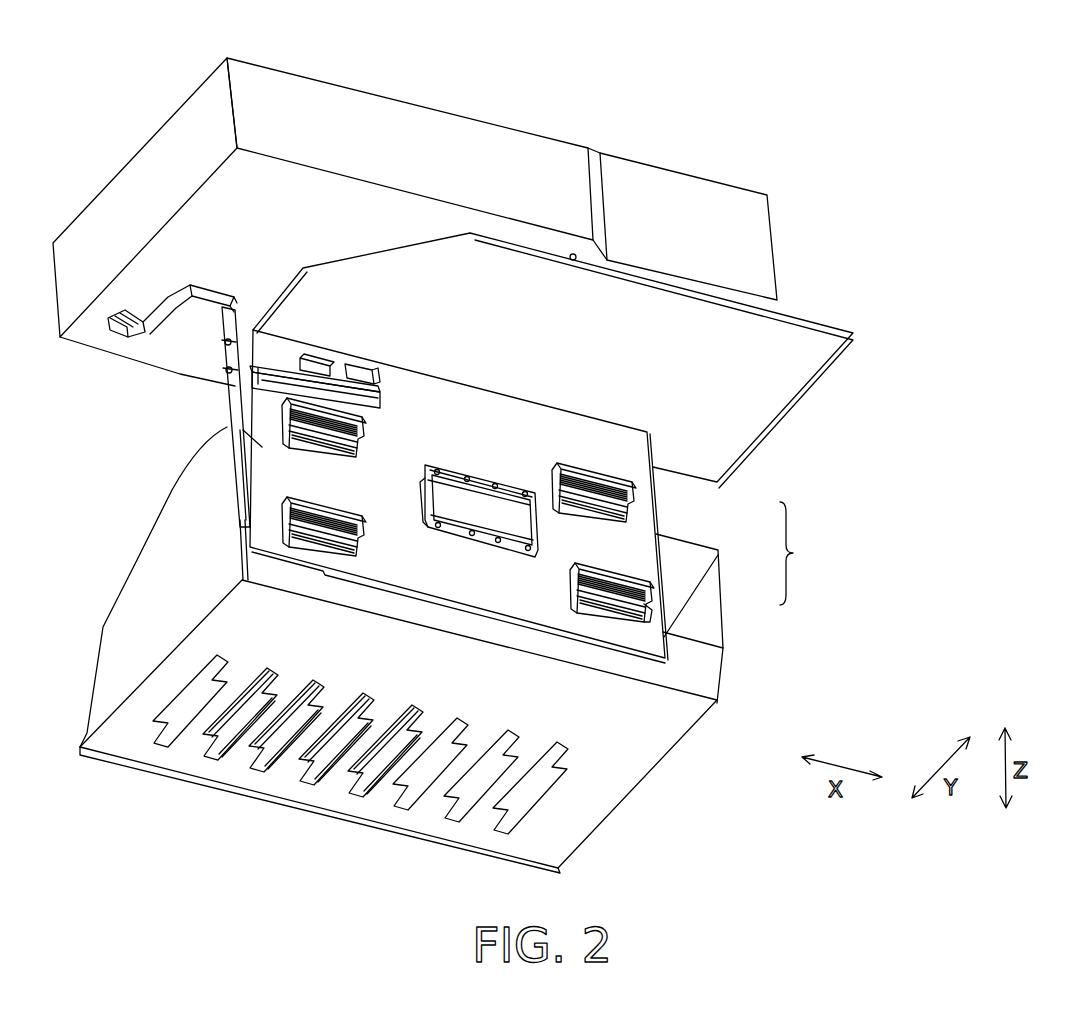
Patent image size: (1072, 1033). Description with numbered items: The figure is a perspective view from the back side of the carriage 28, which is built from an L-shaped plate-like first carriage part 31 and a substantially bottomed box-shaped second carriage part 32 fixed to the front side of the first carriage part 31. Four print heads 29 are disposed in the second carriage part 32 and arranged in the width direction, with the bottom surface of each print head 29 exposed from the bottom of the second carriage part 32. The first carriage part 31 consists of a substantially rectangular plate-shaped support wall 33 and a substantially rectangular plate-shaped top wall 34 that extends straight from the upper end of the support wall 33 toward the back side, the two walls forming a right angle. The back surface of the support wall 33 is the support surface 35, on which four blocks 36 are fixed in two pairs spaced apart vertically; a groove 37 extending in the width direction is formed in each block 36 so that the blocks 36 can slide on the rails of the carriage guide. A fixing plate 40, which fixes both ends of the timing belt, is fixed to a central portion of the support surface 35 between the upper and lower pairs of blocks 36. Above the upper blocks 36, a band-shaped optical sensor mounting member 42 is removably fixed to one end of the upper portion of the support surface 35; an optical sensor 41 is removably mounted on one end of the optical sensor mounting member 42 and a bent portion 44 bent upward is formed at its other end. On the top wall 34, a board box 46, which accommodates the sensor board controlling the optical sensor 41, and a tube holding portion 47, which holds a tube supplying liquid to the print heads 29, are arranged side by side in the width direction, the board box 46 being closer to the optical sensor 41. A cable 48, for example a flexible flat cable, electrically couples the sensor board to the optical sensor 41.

The carriage 28 is at (535, 516).
The print heads 29 is at (234, 720).
The first carriage part 31 is at (663, 528).
The second carriage part 32 is at (726, 582).
The support wall 33 is at (657, 493).
The top wall 34 is at (783, 412).
The support surface 35 is at (262, 447).
The blocks 36 is at (370, 540).
The groove 37 is at (658, 605).
The fixing plate 40 is at (467, 508).
The optical sensor 41 is at (367, 380).
The optical sensor mounting member 42 is at (233, 387).
The bent portion 44 is at (227, 355).
The board box 46 is at (377, 95).
The tube holding portion 47 is at (731, 186).
The cable 48 is at (212, 291).